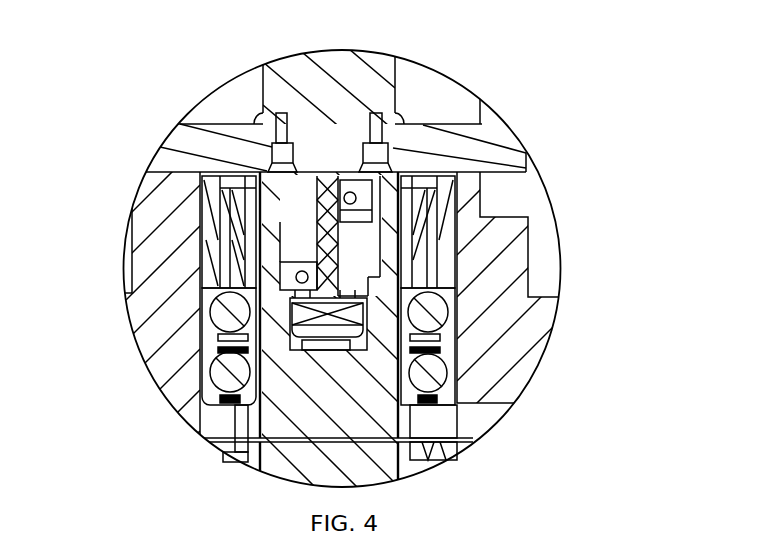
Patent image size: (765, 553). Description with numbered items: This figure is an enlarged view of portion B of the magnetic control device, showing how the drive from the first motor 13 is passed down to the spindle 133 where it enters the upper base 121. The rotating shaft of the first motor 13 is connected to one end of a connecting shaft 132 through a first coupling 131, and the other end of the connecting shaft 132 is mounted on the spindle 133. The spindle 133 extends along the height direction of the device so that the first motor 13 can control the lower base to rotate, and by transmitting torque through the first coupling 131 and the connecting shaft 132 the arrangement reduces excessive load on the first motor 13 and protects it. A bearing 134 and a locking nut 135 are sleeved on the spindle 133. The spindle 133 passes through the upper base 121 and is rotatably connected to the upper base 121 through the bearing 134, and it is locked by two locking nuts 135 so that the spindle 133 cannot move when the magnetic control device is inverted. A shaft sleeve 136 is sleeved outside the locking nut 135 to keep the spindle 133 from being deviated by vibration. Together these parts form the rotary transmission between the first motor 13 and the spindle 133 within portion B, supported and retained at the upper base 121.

The first motor 13 is at (336, 108).
The portion B is at (532, 99).
The upper base 121 is at (122, 324).
The first coupling 131 is at (455, 225).
The connecting shaft 132 is at (468, 295).
The spindle 133 is at (348, 331).
The bearing 134 is at (424, 346).
The locking nut 135 is at (155, 224).
The shaft sleeve 136 is at (144, 254).